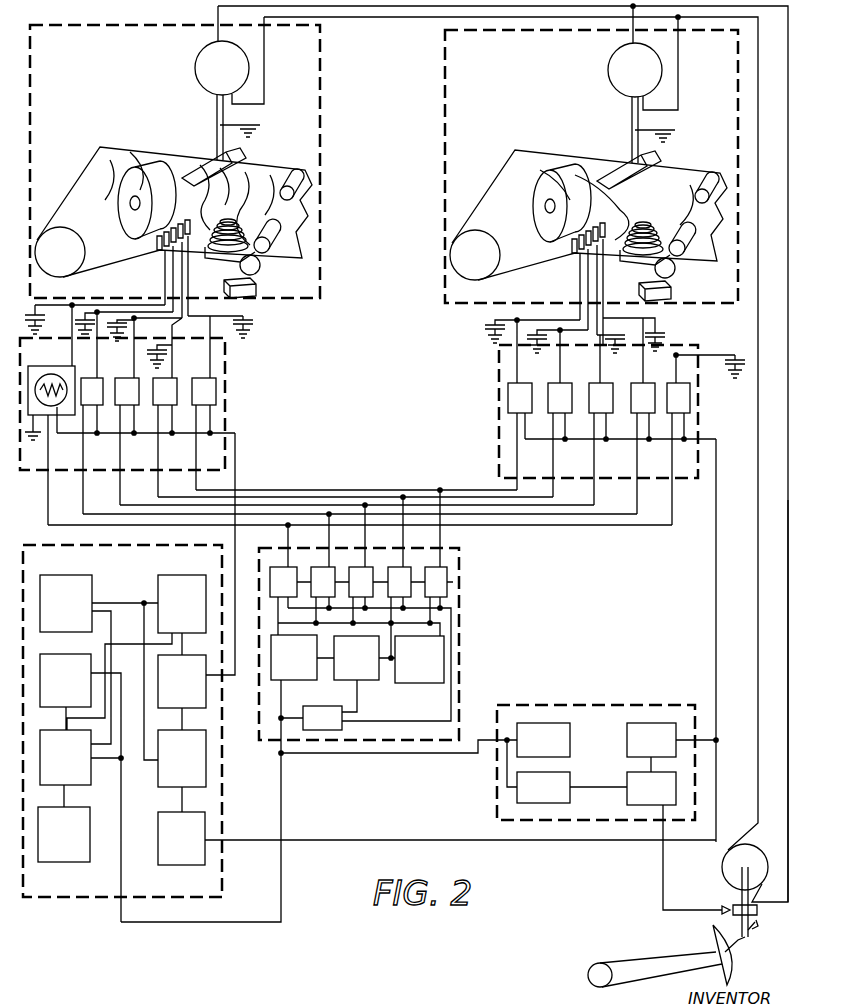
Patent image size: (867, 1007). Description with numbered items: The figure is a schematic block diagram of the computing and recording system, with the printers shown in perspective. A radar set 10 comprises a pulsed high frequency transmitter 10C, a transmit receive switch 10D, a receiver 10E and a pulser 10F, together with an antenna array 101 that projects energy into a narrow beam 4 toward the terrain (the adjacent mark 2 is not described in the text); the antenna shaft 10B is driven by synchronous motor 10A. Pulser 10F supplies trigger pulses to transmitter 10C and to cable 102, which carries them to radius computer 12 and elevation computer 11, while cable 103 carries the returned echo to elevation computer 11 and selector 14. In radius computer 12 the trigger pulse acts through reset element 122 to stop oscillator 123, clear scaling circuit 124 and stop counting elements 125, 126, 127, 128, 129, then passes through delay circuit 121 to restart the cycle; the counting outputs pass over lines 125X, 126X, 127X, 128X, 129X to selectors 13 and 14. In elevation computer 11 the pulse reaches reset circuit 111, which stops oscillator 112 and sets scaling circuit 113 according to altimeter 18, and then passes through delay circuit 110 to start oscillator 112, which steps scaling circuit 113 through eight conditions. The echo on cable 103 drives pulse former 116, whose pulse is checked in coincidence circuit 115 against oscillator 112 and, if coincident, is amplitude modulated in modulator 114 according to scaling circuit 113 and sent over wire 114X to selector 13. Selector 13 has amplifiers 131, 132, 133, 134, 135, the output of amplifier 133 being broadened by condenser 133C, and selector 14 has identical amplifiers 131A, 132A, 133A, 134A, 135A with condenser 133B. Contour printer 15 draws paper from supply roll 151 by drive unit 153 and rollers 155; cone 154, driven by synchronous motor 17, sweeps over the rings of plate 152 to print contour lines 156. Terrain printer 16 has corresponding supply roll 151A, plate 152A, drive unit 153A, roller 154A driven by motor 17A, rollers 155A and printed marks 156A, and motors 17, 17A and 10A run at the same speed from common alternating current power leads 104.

The aircraft arrow 2 is at (754, 928).
The narrow beam 4 is at (641, 975).
The radar set 10 is at (604, 704).
The synchronous motor 10A is at (723, 868).
The shaft 10B is at (740, 900).
The transmitter 10C is at (570, 797).
The transmit receive switch 10D is at (638, 808).
The receiver 10E is at (645, 722).
The pulser 10F is at (559, 740).
The elevation computer 11 is at (92, 898).
The radius computer 12 is at (462, 612).
The selector 13 is at (222, 356).
The selector 14 is at (688, 482).
The contour printer 15 is at (294, 300).
The terrain printer 16 is at (480, 305).
The synchronous motor 17 is at (240, 63).
The synchronous motor 17A is at (656, 68).
The altimeter 18 is at (62, 863).
The antenna array 101 is at (716, 950).
The cable 102 is at (418, 754).
The cable 103 is at (716, 725).
The alternating current power leads 104 is at (787, 620).
The delay circuit 110 is at (60, 655).
The reset circuit 111 is at (58, 720).
The oscillator 112 is at (72, 575).
The scaling circuit 113 is at (195, 575).
The modulator 114 is at (206, 694).
The wire 114X is at (237, 460).
The coincidence circuit 115 is at (168, 788).
The pulse former 116 is at (170, 865).
The delay circuit 121 is at (313, 700).
The reset element 122 is at (330, 730).
The oscillator 123 is at (365, 683).
The scaling circuit 124 is at (445, 661).
The counting element 125 is at (448, 586).
The counting element 126 is at (431, 553).
The counting element 127 is at (394, 553).
The counting element 128 is at (354, 553).
The counting element 129 is at (316, 553).
The gate output line 125X is at (455, 505).
The gate output line 126X is at (412, 510).
The gate output line 127X is at (368, 515).
The gate output line 128X is at (325, 522).
The gate output line 129X is at (285, 534).
The amplifier 131 is at (205, 378).
The amplifier 132 is at (165, 410).
The amplifier 133 is at (126, 378).
The amplifier 134 is at (88, 408).
The amplifier 135 is at (33, 366).
The amplifier 131A is at (505, 397).
The amplifier 132A is at (560, 383).
The amplifier 133A is at (630, 370).
The amplifier 134A is at (652, 383).
The amplifier 135A is at (690, 400).
The condenser 133B is at (630, 317).
The condenser 133C is at (110, 318).
The supply roll 151 is at (67, 262).
The plate 152 is at (152, 248).
The drive unit 153 is at (254, 290).
The cone 154 is at (118, 201).
The rollers 155 is at (262, 263).
The contour lines 156 is at (281, 224).
The supply roll 151A is at (478, 272).
The plate 152A is at (568, 254).
The drive unit 153A is at (669, 293).
The roller 154A is at (533, 222).
The rollers 155A is at (676, 268).
The printed marks 156A is at (680, 190).